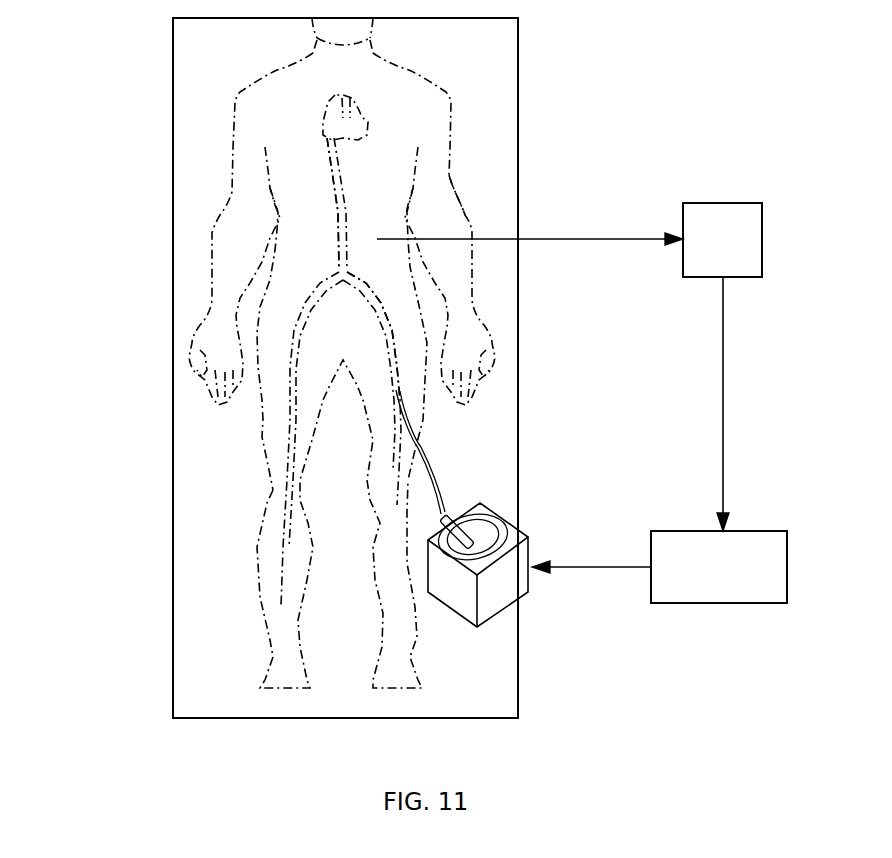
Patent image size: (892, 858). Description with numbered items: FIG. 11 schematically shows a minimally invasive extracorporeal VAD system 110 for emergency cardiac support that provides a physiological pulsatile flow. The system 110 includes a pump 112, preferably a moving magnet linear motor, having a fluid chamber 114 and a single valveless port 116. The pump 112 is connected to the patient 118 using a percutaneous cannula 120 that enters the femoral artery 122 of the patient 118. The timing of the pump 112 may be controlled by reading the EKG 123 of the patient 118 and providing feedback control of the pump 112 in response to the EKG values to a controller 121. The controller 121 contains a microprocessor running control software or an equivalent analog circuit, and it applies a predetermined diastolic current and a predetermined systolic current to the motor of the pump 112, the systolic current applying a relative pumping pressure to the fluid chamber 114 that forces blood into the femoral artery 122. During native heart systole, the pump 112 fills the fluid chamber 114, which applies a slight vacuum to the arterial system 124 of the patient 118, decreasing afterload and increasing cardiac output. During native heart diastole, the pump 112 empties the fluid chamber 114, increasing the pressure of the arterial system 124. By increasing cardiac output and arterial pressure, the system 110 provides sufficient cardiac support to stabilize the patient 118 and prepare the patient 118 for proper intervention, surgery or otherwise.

The minimally invasive extracorporeal VAD system 110 is at (145, 170).
The pump 112 is at (523, 532).
The fluid chamber 114 is at (490, 517).
The single valveless port 116 is at (460, 517).
The patient 118 is at (460, 213).
The percutaneous cannula 120 is at (403, 413).
The controller 121 is at (651, 588).
The femoral artery 122 is at (397, 332).
The EKG 123 is at (702, 277).
The arterial system 124 is at (347, 210).